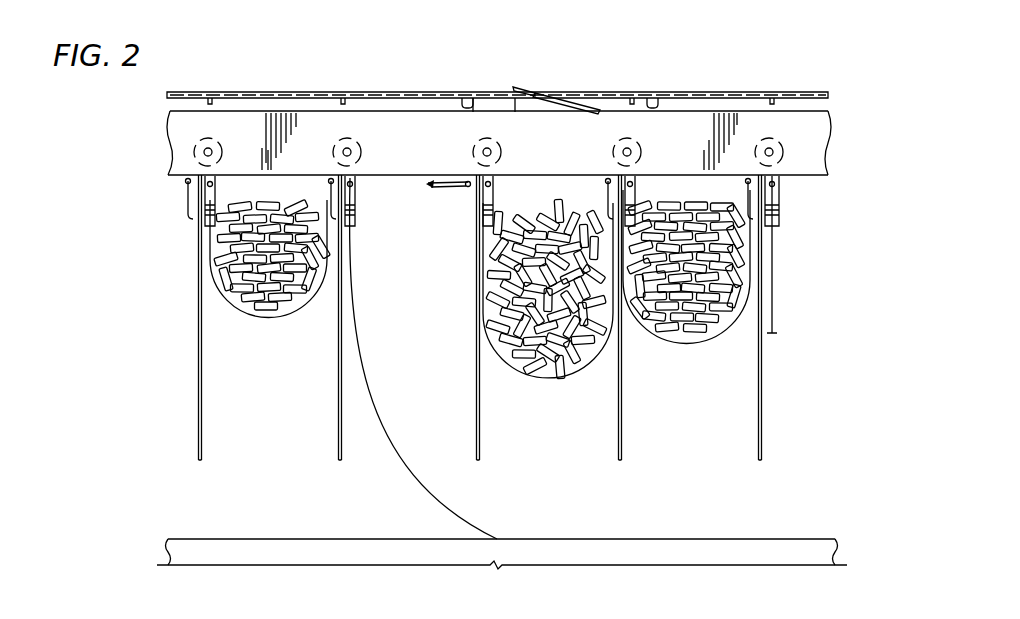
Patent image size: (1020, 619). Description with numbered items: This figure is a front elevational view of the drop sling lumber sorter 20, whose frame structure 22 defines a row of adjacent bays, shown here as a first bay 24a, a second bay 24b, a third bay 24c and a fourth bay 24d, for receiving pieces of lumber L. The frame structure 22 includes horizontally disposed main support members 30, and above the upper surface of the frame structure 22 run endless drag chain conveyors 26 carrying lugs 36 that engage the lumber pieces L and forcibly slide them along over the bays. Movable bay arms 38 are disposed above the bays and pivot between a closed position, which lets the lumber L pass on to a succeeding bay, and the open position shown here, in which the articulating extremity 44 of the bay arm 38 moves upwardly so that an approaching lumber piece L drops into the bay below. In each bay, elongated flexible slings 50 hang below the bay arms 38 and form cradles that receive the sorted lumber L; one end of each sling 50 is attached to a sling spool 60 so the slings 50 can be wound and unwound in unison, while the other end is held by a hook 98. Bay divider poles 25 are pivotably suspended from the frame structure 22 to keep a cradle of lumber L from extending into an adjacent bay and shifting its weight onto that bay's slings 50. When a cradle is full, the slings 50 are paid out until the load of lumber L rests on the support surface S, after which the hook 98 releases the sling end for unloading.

The drop sling lumber sorter 20 is at (276, 68).
The frame structure 22 is at (168, 130).
The first bay 24a is at (290, 414).
The second bay 24b is at (427, 351).
The third bay 24c is at (525, 478).
The fourth bay 24d is at (717, 444).
The bay divider poles 25 is at (198, 325).
The endless drag chain conveyors 26 is at (388, 92).
The main support members 30 is at (828, 146).
The lugs 36 is at (463, 92).
The bay arms 38 is at (584, 96).
The articulating extremity 44 is at (524, 88).
The slings 50 is at (249, 317).
The sling spool 60 is at (362, 150).
The hook 98 is at (431, 190).
The support surface S is at (743, 537).
The lumber pieces L is at (498, 96).